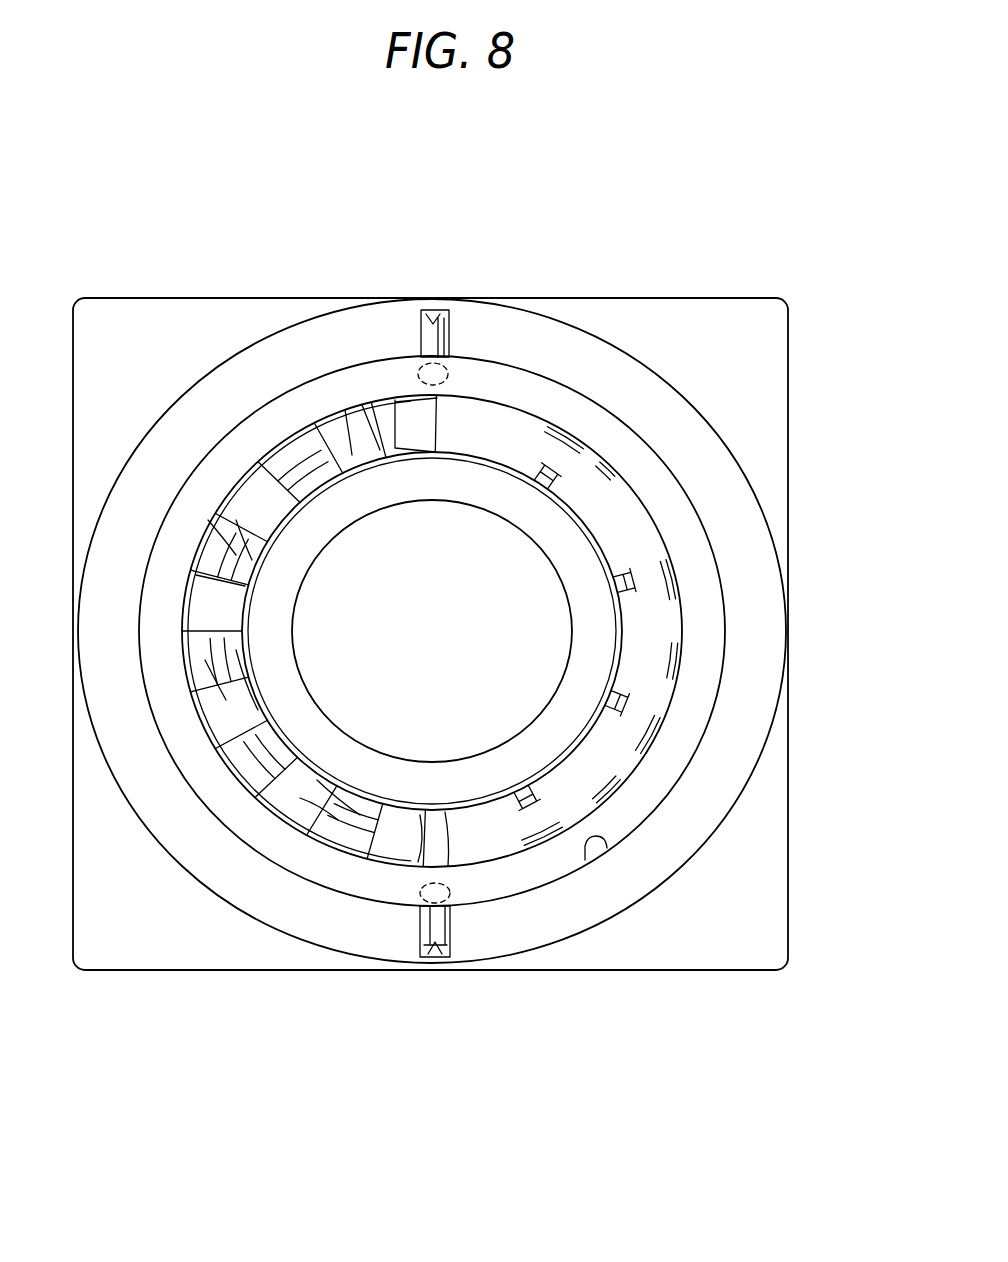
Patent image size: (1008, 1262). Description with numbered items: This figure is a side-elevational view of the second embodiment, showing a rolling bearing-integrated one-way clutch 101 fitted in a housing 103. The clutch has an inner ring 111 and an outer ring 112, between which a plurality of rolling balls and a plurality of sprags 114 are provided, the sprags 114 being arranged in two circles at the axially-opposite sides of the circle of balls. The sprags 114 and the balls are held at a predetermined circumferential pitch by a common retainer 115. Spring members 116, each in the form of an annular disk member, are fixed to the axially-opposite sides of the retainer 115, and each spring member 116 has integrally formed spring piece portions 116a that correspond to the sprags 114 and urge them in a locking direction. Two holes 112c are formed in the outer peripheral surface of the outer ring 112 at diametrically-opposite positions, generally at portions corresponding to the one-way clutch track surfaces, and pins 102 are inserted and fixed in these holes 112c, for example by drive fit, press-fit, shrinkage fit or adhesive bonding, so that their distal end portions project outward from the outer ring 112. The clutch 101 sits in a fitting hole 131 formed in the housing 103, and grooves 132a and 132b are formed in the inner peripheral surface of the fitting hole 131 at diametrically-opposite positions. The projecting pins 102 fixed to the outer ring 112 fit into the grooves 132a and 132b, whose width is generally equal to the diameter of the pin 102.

The rolling bearing-integrated one-way clutch 101 is at (697, 325).
The pin 102 is at (462, 333).
The housing 103 is at (722, 953).
The inner ring 111 is at (423, 493).
The outer ring 112 is at (535, 397).
The hole 112c is at (408, 348).
The sprag 114 is at (350, 442).
The retainer 115 is at (300, 512).
The spring member 116 is at (630, 518).
The spring piece portion 116a is at (382, 400).
The fitting hole 131 is at (607, 848).
The groove 132a is at (437, 312).
The groove 132b is at (440, 950).